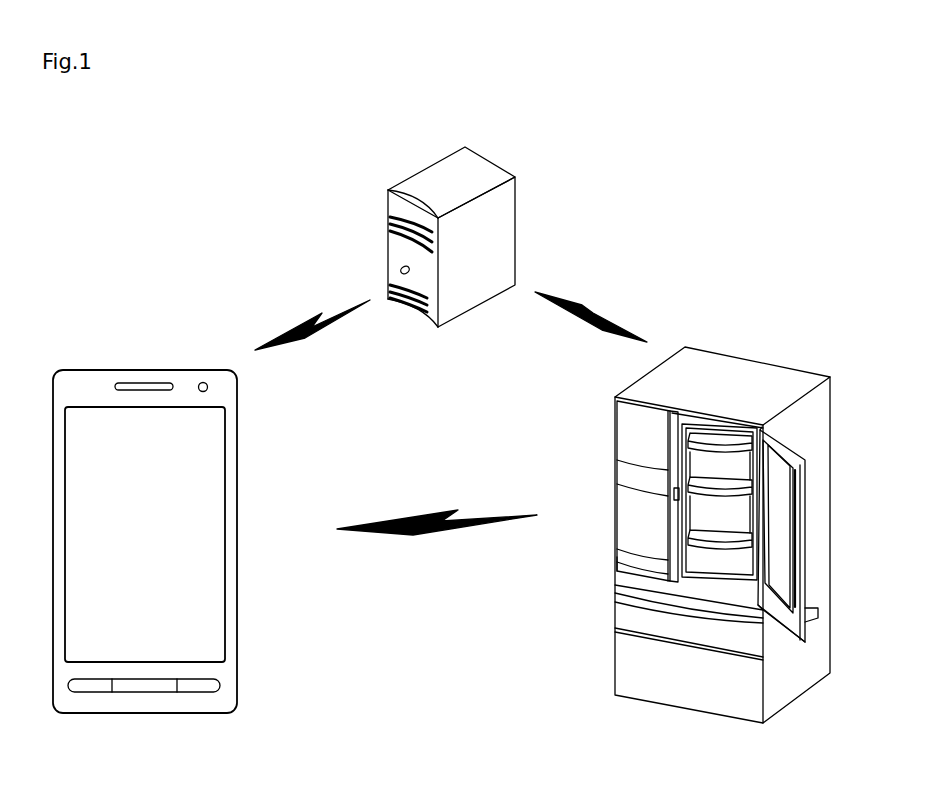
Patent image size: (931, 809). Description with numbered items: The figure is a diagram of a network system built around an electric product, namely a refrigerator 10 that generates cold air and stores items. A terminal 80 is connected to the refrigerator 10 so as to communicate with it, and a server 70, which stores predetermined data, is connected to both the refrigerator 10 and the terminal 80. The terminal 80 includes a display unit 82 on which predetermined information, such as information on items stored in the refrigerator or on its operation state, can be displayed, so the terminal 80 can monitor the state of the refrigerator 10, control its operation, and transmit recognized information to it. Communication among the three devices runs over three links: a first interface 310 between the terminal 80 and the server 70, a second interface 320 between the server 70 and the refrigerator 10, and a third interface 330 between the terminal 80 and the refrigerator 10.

The refrigerator 10 is at (748, 350).
The server 70 is at (490, 152).
The terminal 80 is at (172, 505).
The display unit 82 is at (225, 451).
The first interface 310 is at (290, 328).
The second interface 320 is at (602, 314).
The third interface 330 is at (458, 533).